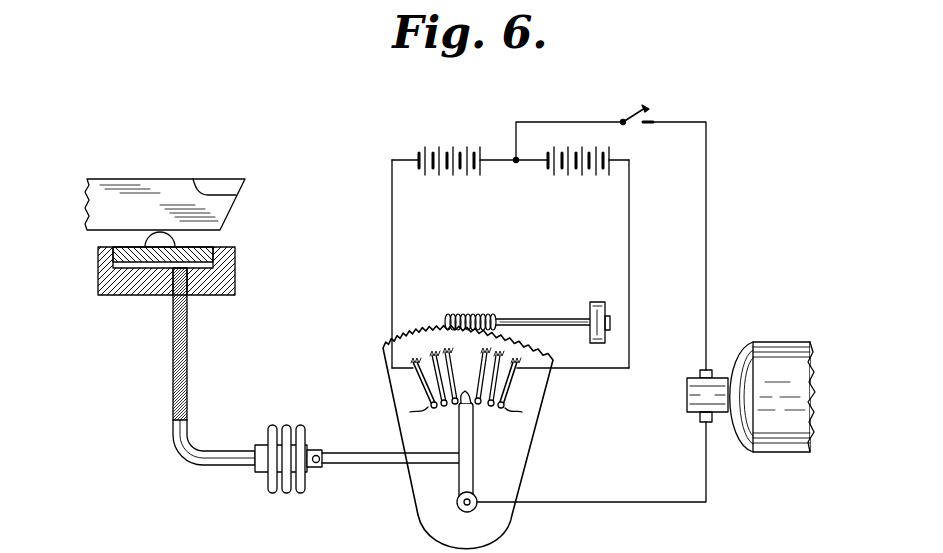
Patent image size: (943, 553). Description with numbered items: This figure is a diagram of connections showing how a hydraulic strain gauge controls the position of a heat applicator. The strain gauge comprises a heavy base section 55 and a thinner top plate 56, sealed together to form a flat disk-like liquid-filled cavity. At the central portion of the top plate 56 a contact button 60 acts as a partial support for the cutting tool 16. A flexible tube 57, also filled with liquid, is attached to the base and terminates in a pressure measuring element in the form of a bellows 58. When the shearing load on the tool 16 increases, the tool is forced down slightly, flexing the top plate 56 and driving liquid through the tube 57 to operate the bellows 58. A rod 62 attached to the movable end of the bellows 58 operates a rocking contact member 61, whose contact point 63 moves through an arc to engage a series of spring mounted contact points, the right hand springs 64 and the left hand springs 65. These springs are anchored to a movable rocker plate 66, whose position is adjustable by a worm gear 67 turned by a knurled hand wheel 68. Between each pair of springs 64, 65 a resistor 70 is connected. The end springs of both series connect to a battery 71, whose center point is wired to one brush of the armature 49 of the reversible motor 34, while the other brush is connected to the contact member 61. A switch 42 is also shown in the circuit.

The cutting tool 16 is at (176, 186).
The contact button 60 is at (148, 238).
The top plate 56 is at (212, 249).
The base section 55 is at (235, 288).
The flexible tube 57 is at (188, 383).
The bellows 58 is at (273, 427).
The rod 62 is at (360, 465).
The rocking contact member 61 is at (474, 445).
The contact point 63 is at (466, 392).
The left hand springs 65 is at (411, 412).
The right hand springs 64 is at (500, 410).
The rocker plate 66 is at (518, 478).
The resistor 70 is at (552, 360).
The worm gear 67 is at (470, 313).
The knurled hand wheel 68 is at (593, 303).
The battery 71 is at (494, 129).
The switch 42 is at (624, 120).
The reversible motor 34 is at (750, 308).
The armature 49 is at (790, 345).